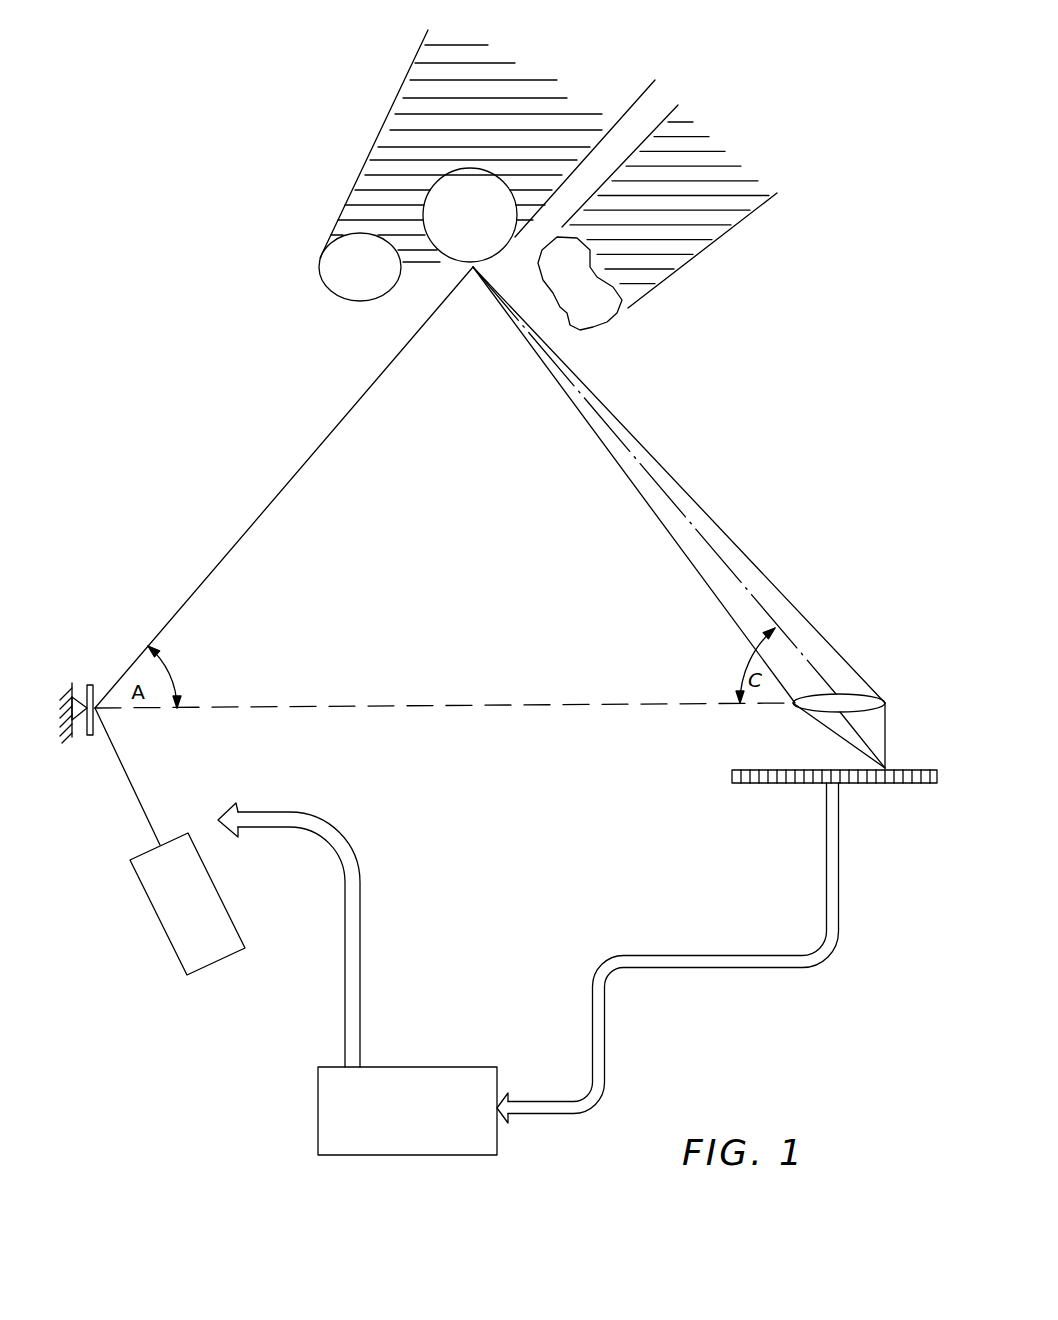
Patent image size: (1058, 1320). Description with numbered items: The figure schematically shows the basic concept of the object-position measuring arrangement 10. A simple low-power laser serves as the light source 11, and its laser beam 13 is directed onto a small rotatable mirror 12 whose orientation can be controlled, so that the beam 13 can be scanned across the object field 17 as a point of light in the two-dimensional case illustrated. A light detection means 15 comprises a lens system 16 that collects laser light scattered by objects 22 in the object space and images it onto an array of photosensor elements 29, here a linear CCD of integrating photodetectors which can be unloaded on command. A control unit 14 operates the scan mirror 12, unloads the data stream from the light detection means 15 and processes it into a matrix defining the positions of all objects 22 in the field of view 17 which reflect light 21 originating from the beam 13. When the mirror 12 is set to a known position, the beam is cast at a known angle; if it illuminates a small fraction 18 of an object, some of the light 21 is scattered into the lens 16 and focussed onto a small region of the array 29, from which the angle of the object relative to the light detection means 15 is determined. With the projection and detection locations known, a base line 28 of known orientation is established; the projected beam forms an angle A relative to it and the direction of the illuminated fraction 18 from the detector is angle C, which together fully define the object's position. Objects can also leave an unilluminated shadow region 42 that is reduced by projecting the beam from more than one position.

The particle measuring system 10 is at (117, 920).
The light source 11 is at (206, 963).
The rotatable mirror 12 is at (80, 687).
The laser beam 13 is at (222, 563).
The control unit 14 is at (333, 1132).
The light detection means 15 is at (776, 749).
The lens system 16 is at (833, 695).
The object field 17 is at (445, 440).
The illuminated fraction of an object 18 is at (467, 270).
The scattered light 21 is at (693, 535).
The objects 22 is at (360, 290).
The base line 28 is at (407, 710).
The array of photosensor elements 29 is at (901, 783).
The shadow region 42 is at (397, 142).